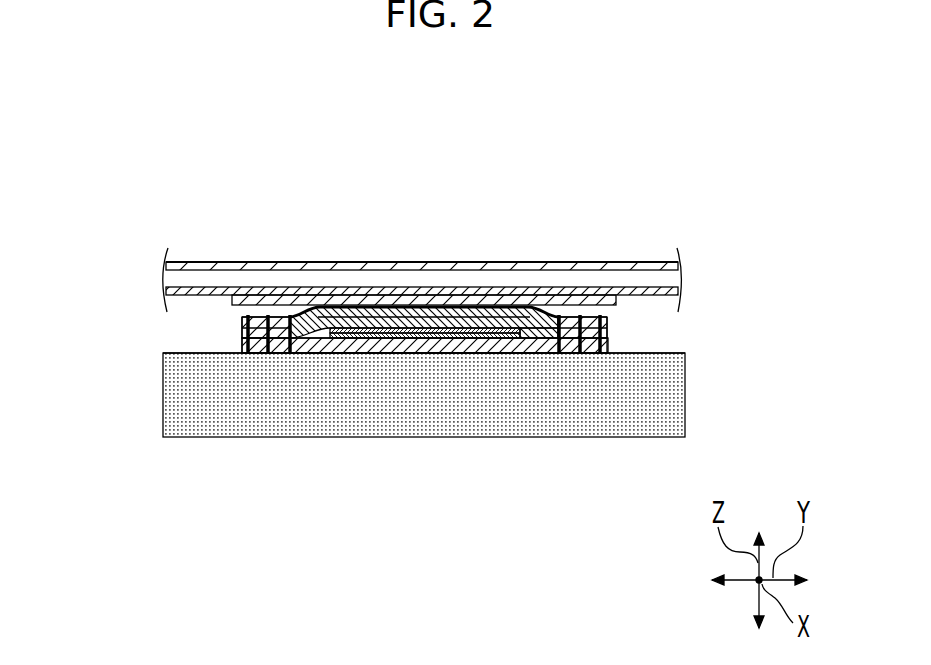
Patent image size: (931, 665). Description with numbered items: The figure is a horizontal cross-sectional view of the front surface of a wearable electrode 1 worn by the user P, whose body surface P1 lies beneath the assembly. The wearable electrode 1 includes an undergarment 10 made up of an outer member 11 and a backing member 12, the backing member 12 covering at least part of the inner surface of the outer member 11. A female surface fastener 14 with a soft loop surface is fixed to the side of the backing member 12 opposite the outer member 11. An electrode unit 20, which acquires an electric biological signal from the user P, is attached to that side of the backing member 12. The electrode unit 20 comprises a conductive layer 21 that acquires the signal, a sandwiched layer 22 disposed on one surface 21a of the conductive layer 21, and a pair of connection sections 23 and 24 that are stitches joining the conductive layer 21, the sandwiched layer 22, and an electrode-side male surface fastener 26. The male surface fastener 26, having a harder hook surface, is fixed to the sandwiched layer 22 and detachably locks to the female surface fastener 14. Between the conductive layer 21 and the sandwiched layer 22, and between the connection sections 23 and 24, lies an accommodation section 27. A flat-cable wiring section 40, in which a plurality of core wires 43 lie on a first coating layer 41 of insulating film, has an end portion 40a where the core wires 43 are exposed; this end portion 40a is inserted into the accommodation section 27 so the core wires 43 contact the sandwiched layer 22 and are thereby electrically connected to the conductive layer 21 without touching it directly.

The wearable electrode 1 is at (185, 200).
The undergarment 10 is at (422, 208).
The outer member 11 is at (597, 266).
The backing member 12 is at (622, 291).
The female surface fastener 14 is at (317, 298).
The electrode unit 20 is at (415, 354).
The conductive layer 21 is at (470, 350).
The one surface of the conductive layer 21a is at (262, 336).
The sandwiched layer 22 is at (490, 334).
The connection section 23 is at (556, 316).
The connection section 24 is at (292, 316).
The electrode-side male surface fastener 26 is at (533, 319).
The accommodation section 27 is at (368, 312).
The wiring section 40 is at (425, 436).
The end portion of the wiring section 40a is at (392, 352).
The first coating layer 41 is at (340, 341).
The core wires 43 is at (357, 336).
The user P is at (155, 385).
The support plate surface P1 is at (185, 423).